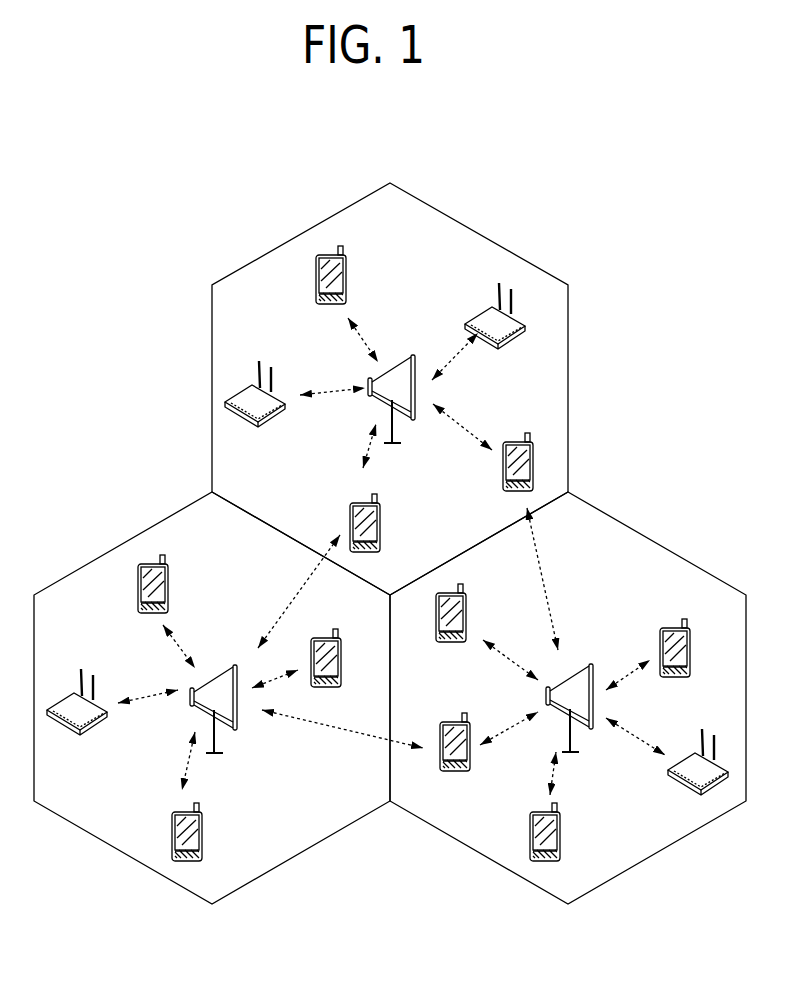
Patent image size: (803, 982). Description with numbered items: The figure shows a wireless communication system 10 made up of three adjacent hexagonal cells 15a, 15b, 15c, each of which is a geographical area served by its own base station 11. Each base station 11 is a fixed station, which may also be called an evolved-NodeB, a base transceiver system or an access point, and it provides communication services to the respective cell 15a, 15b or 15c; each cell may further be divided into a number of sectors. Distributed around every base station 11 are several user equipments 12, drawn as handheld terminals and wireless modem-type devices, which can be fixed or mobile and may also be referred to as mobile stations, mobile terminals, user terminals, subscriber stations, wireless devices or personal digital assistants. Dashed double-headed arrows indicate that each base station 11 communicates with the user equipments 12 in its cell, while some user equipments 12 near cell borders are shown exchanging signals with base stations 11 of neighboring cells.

The wireless communication system 10 is at (643, 292).
The base station 11 is at (406, 355).
The user equipment 12 is at (347, 283).
The cell 15a is at (569, 376).
The cell 15b is at (680, 555).
The cell 15c is at (100, 555).